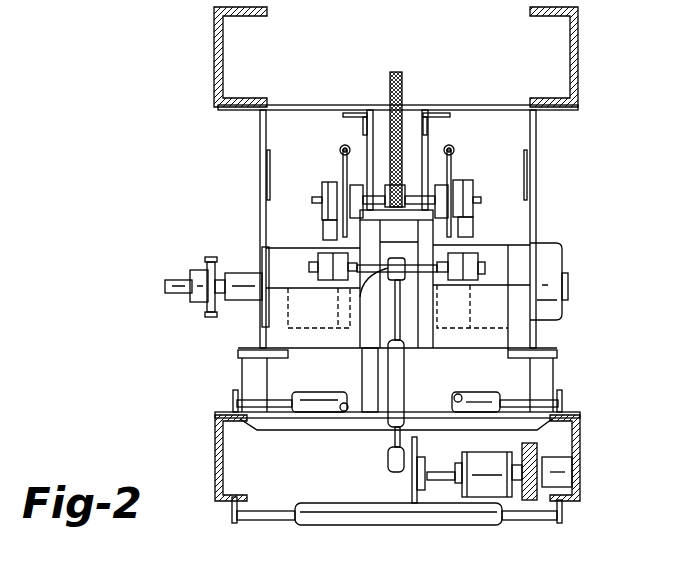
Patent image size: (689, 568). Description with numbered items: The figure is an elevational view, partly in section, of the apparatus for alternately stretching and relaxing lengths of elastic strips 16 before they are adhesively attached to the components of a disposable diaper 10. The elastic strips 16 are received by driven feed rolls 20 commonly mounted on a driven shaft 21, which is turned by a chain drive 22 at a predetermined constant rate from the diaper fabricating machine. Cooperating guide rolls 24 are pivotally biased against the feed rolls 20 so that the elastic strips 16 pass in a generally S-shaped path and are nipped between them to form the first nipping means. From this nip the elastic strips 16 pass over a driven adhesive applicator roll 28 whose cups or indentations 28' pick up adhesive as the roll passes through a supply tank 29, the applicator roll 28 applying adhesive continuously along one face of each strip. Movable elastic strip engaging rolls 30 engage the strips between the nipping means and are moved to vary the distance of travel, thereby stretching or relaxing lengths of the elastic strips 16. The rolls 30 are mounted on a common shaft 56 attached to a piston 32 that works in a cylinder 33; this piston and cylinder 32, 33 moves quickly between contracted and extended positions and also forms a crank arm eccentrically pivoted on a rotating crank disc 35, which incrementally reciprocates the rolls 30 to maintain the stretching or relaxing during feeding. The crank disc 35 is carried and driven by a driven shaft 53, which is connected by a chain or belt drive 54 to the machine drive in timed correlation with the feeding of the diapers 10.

The disposable diaper 10 is at (50, 2).
The chain drive 22 is at (403, 81).
The driven shaft 21 is at (412, 188).
The elastic strips 16 is at (330, 182).
The feed rolls 20 is at (320, 190).
The guide rolls 24 is at (318, 205).
The elastic strip engaging rolls 30 is at (325, 258).
The adhesive applicator roll 28 is at (539, 267).
The common shaft 56 is at (376, 292).
The cups or indentations 28' is at (472, 305).
The supply tank 29 is at (262, 337).
The piston 32 is at (370, 328).
The cylinder 33 is at (400, 383).
The crank disc 35 is at (388, 468).
The driven shaft 53 is at (437, 472).
The chain or belt drive 54 is at (533, 455).